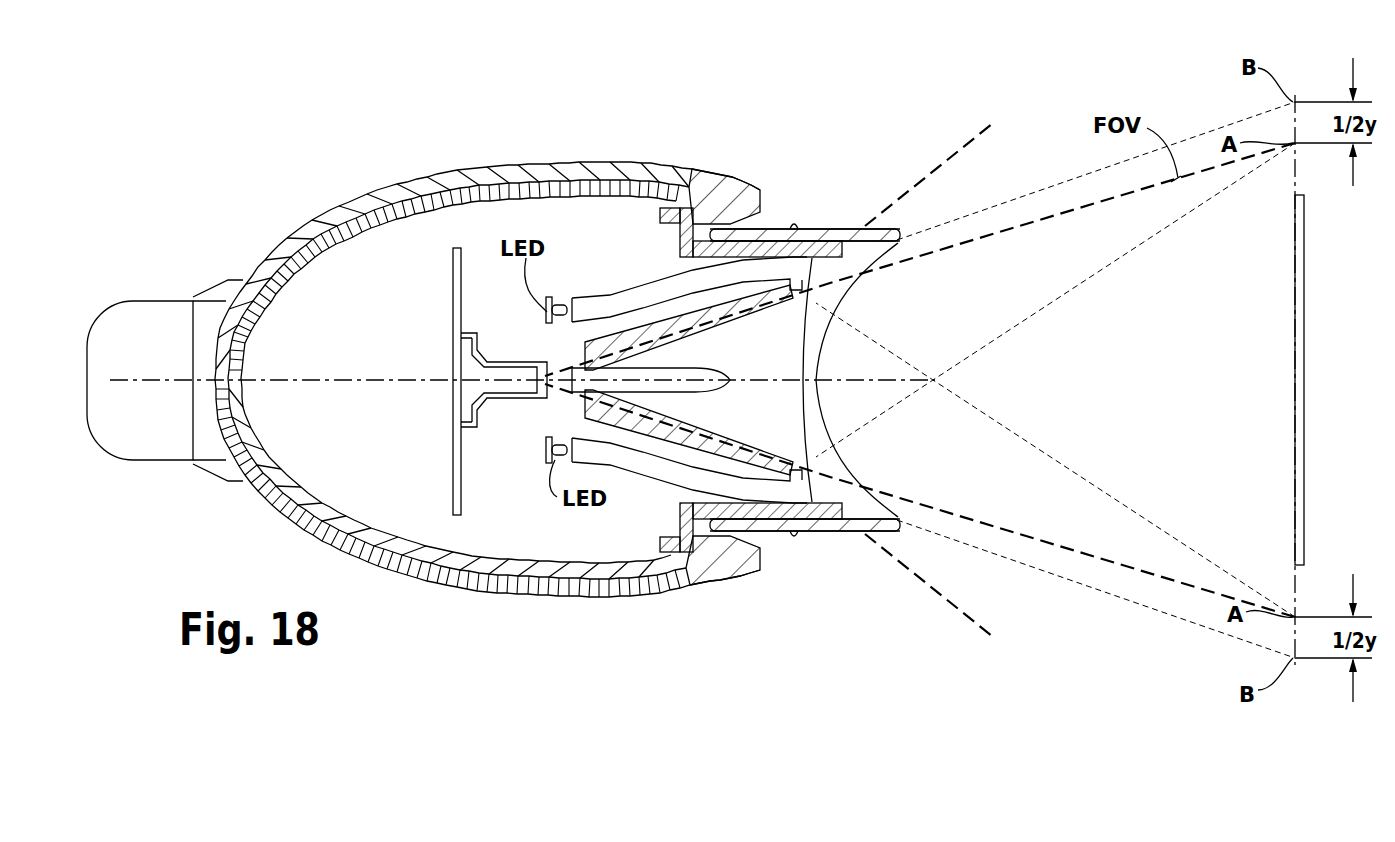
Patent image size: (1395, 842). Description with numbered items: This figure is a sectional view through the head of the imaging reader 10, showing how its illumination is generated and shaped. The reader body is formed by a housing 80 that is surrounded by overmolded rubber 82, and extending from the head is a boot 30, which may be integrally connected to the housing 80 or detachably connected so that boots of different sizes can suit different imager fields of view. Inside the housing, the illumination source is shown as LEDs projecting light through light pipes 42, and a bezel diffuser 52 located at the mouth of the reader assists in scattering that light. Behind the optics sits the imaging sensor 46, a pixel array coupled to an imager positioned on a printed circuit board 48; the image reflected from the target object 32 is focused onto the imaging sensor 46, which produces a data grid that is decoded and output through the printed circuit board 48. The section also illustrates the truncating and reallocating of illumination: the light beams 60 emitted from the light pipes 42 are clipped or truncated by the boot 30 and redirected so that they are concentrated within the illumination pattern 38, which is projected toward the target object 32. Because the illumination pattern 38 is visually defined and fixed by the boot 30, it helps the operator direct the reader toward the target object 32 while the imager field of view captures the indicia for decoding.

The imaging reader 10 is at (368, 130).
The boot 30 is at (840, 228).
The target object 32 is at (1310, 432).
The illumination pattern 38 is at (1085, 175).
The light pipes 42 is at (637, 298).
The imaging sensor 46 is at (467, 407).
The printed circuit board 48 is at (457, 487).
The bezel diffuser 52 is at (768, 343).
The light beams 60 is at (958, 148).
The housing 80 is at (593, 572).
The overmolded rubber 82 is at (655, 592).